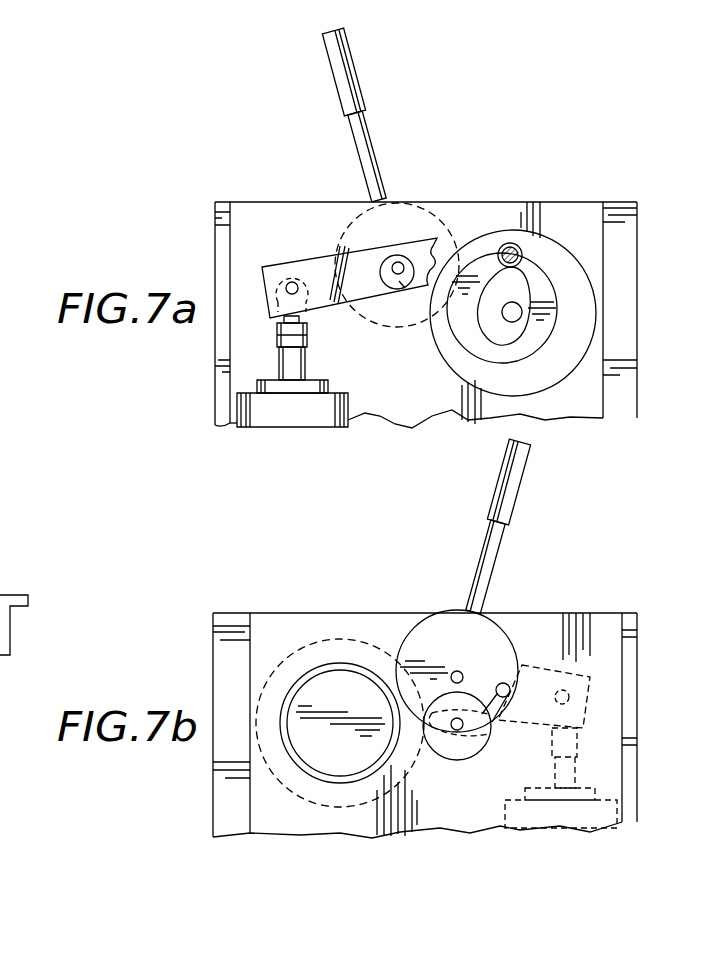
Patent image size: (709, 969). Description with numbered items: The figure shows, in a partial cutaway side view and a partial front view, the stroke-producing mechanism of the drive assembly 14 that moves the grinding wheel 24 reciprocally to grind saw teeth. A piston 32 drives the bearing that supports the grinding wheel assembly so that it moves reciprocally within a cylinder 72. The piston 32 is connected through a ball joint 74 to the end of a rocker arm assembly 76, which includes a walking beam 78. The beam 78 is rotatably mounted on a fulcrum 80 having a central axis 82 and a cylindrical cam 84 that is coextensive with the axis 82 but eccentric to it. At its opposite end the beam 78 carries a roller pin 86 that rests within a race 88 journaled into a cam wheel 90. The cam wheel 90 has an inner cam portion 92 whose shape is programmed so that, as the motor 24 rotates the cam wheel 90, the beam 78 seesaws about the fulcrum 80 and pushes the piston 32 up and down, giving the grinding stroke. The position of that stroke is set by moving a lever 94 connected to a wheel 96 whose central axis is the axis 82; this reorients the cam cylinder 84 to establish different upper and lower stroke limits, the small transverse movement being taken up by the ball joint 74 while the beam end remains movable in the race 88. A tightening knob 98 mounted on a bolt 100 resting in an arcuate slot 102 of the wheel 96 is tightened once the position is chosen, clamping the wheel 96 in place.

In FIG. 7a, the drive assembly 14 is at (583, 202).
In FIG. 7b, the drive assembly 14 is at (598, 613).
In FIG. 7b, the motor 24 is at (325, 691).
In FIG. 7a, the piston 32 is at (308, 364).
In FIG. 7b, the piston 32 is at (577, 767).
In FIG. 7a, the cylinder 72 is at (348, 411).
In FIG. 7b, the cylinder 72 is at (591, 818).
In FIG. 7a, the ball joint 74 is at (290, 283).
In FIG. 7b, the ball joint 74 is at (592, 692).
In FIG. 7a, the rocker arm assembly 76 is at (446, 204).
In FIG. 7a, the walking beam 78 is at (317, 265).
In FIG. 7b, the walking beam 78 is at (594, 707).
In FIG. 7a, the fulcrum 80 is at (410, 256).
In FIG. 7a, the central axis 82 is at (392, 274).
In FIG. 7b, the central axis 82 is at (458, 672).
In FIG. 7a, the cylindrical cam 84 is at (405, 286).
In FIG. 7a, the roller pin 86 is at (522, 254).
In FIG. 7a, the race 88 is at (538, 342).
In FIG. 7a, the cam wheel 90 is at (582, 333).
In FIG. 7b, the cam wheel 90 is at (333, 808).
In FIG. 7a, the inner cam portion 92 is at (495, 328).
In FIG. 7a, the lever 94 is at (362, 92).
In FIG. 7b, the lever 94 is at (527, 475).
In FIG. 7b, the wheel 96 is at (445, 611).
In FIG. 7b, the tightening knob 98 is at (458, 758).
In FIG. 7b, the bolt 100 is at (460, 731).
In FIG. 7b, the arcuate slot 102 is at (510, 688).